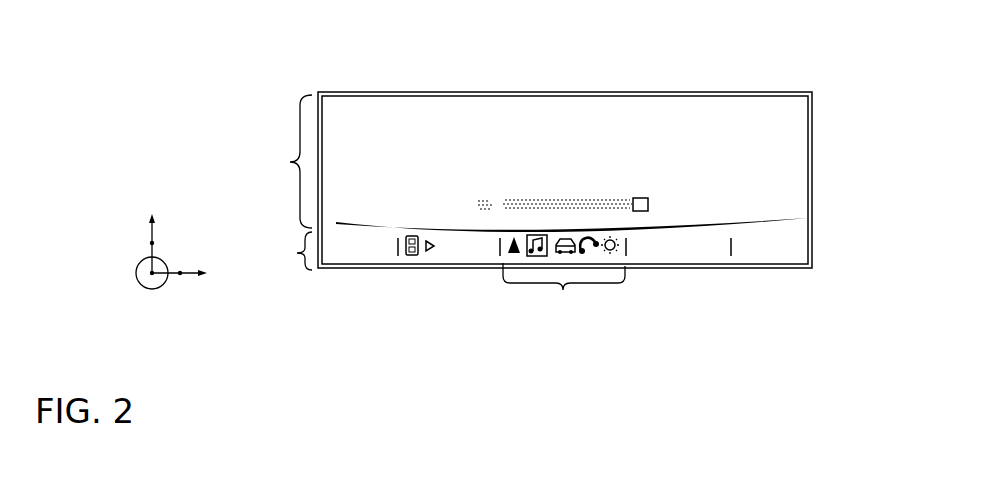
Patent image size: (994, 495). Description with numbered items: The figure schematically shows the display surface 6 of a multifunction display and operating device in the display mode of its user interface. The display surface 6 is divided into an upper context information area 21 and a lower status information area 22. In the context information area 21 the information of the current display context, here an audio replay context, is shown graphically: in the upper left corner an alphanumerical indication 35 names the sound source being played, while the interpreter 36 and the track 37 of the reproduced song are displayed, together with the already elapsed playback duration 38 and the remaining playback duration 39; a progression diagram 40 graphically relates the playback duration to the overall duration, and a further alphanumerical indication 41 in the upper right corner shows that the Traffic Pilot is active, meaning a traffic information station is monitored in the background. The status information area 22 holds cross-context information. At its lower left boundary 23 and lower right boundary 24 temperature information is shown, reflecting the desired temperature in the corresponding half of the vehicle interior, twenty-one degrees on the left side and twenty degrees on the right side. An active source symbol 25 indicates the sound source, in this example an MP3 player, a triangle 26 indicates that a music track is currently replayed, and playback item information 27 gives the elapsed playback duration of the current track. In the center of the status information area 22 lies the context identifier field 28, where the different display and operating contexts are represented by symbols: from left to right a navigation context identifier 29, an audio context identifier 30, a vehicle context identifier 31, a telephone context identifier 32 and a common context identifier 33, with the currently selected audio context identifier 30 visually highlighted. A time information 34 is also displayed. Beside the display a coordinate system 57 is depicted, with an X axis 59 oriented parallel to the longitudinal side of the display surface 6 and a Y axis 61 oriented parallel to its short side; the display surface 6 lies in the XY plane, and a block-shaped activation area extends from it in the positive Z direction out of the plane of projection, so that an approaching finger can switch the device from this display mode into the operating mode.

The display surface 6 is at (797, 132).
The context information area 21 is at (284, 161).
The status information area 22 is at (285, 251).
The lower left boundary 23 is at (366, 259).
The lower right boundary 24 is at (757, 258).
The active source symbol 25 is at (410, 258).
The triangle 26 is at (428, 258).
The playback item information 27 is at (472, 258).
The context identifier field 28 is at (564, 292).
The navigation context identifier 29 is at (513, 258).
The audio context identifier 30 is at (540, 258).
The vehicle context identifier 31 is at (567, 258).
The telephone context identifier 32 is at (585, 258).
The common context identifier 33 is at (612, 259).
The time information 34 is at (682, 258).
The alphanumerical indication 35 is at (361, 108).
The interpreter 36 is at (563, 115).
The track 37 is at (597, 162).
The already elapsed playback duration 38 is at (457, 195).
The remaining playback duration 39 is at (687, 196).
The progression diagram 40 is at (644, 199).
The further alphanumerical indication 41 is at (779, 103).
The coordinate system 57 is at (152, 273).
The X axis 59 is at (180, 273).
The Y axis 61 is at (152, 243).